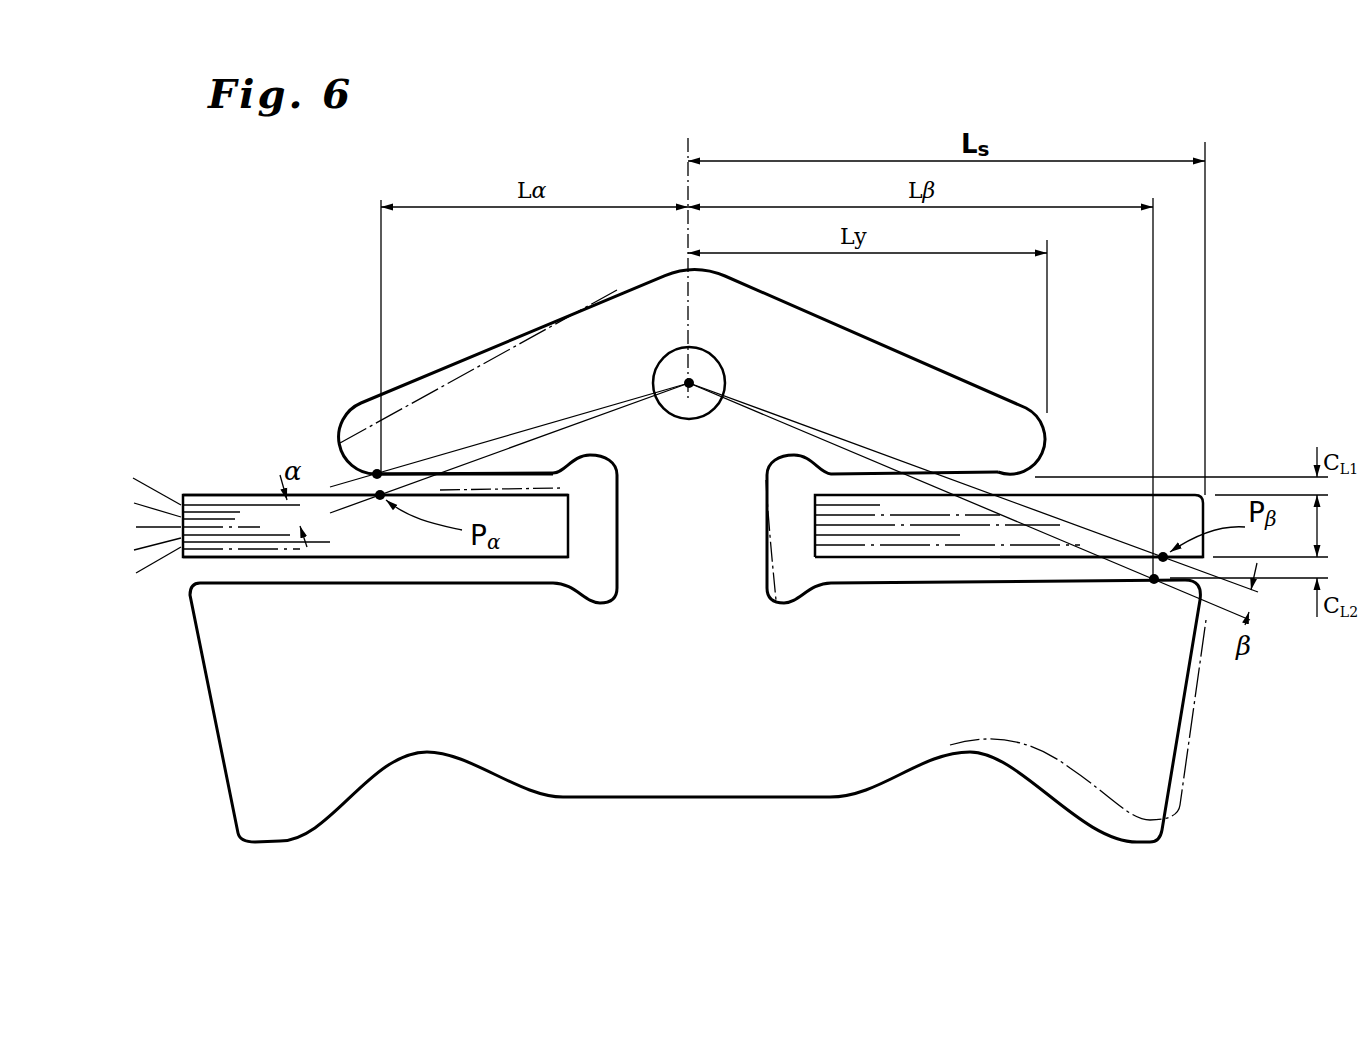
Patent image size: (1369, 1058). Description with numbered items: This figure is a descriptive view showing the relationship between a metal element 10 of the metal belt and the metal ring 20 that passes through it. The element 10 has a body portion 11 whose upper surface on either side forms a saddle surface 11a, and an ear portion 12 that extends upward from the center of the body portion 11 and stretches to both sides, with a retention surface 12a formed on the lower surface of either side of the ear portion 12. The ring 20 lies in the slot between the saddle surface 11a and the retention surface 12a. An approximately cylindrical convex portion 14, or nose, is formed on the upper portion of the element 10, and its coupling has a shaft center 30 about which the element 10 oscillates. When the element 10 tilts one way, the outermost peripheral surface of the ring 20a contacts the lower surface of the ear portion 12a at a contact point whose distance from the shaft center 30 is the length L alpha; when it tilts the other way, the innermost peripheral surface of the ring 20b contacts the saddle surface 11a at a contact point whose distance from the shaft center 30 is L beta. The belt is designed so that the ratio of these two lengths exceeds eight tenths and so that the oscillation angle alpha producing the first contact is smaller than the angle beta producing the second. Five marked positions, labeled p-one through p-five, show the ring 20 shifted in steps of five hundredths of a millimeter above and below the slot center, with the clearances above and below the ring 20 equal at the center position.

The element 10 is at (495, 827).
The body portion 11 is at (673, 783).
The saddle surface 11a is at (1067, 577).
The ear portion 12 is at (897, 367).
The retention surface 12a is at (463, 474).
The convex portion 14 is at (723, 363).
The ring 20 is at (120, 415).
The outermost peripheral surface of the ring 20a is at (218, 495).
The innermost peripheral surface of the ring 20b is at (210, 557).
The shaft center 30 is at (684, 381).